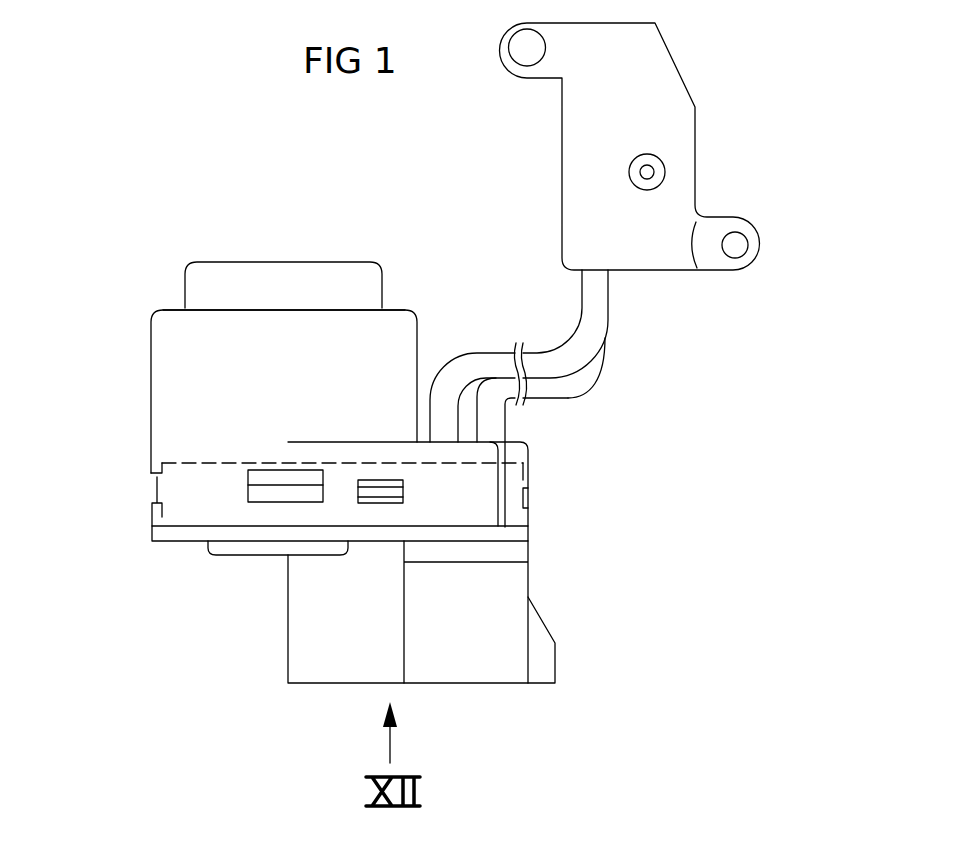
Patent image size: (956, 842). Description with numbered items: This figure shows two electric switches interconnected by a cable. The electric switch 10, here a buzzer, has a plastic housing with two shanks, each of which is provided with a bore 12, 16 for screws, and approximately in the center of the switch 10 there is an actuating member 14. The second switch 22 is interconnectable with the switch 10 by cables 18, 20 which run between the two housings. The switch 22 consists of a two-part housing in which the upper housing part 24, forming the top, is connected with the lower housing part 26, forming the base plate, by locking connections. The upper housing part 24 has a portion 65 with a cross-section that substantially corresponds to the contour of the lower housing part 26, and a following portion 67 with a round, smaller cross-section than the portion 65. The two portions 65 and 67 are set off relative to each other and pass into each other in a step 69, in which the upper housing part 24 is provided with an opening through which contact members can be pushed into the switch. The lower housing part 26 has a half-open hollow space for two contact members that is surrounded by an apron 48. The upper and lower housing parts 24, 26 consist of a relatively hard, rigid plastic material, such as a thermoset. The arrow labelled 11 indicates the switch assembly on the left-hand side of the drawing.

The electric switch 10 is at (704, 43).
The sensor assembly 11 is at (312, 182).
The bore 12 is at (522, 48).
The actuating member 14 is at (648, 172).
The bore 16 is at (737, 245).
The cable 18 is at (580, 374).
The cable 20 is at (546, 357).
The switch 22 is at (231, 210).
The upper housing part 24 is at (123, 399).
The lower housing part 26 is at (237, 590).
The apron 48 is at (543, 636).
The portion 65 is at (182, 515).
The portion 67 is at (165, 332).
The step 69 is at (465, 442).